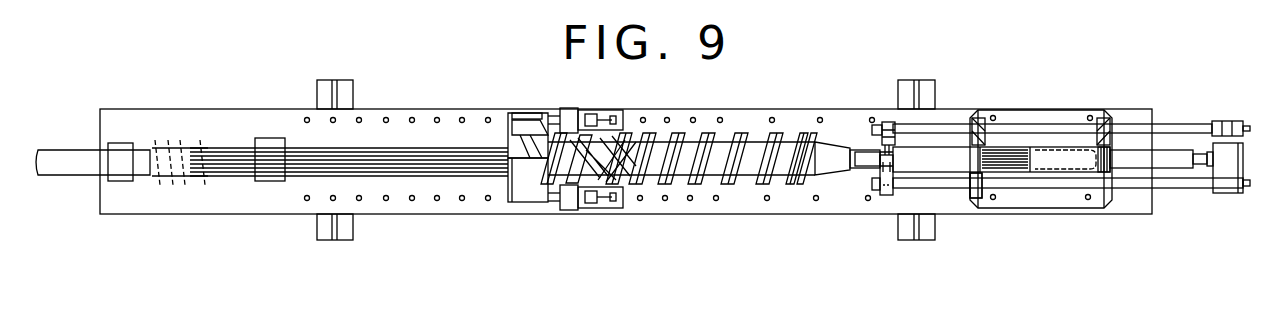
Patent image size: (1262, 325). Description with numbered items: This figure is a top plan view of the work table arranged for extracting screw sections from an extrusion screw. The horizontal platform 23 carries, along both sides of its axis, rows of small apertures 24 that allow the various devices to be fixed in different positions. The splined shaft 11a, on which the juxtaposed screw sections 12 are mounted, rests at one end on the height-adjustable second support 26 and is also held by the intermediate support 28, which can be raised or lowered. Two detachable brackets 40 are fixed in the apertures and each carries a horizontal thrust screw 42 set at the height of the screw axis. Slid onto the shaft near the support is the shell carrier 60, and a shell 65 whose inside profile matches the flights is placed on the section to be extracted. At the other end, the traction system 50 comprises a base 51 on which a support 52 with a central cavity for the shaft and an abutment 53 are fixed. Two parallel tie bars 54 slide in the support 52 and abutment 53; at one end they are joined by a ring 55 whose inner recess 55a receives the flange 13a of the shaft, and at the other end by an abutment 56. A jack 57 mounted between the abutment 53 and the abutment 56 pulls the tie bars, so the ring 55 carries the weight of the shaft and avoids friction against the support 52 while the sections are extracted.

The splined shaft 11a is at (430, 177).
The second support 26 is at (128, 181).
The intermediate support 28 is at (270, 181).
The screw section 12 is at (508, 152).
The shell 65 is at (508, 125).
The shell carrier 60 is at (536, 110).
The detachable bracket 40 is at (612, 118).
The horizontal thrust screw 42 is at (562, 108).
The horizontal platform 23 is at (792, 200).
The small apertures 24 is at (720, 118).
The ring 55 is at (888, 122).
The inner recess 55a is at (884, 148).
The flange 13a is at (882, 152).
The tie bars 54 is at (1050, 130).
The base 51 is at (1025, 114).
The support 52 is at (978, 117).
The abutment 53 is at (1104, 117).
The jack 57 is at (1165, 158).
The abutment 56 is at (1226, 165).
The traction system 50 is at (953, 202).